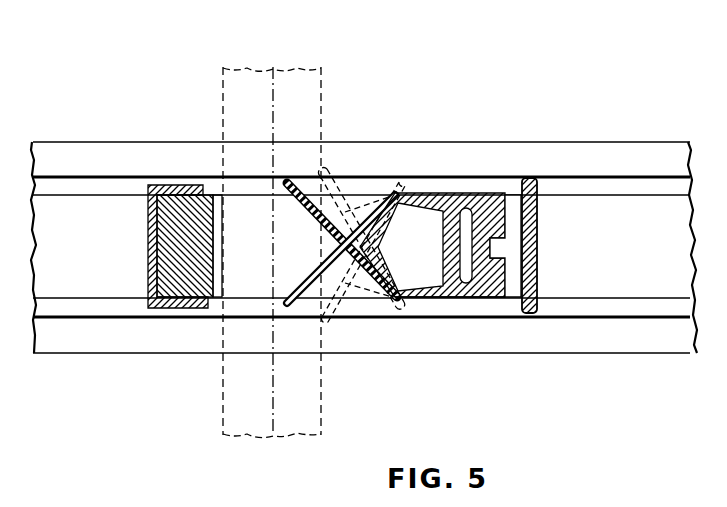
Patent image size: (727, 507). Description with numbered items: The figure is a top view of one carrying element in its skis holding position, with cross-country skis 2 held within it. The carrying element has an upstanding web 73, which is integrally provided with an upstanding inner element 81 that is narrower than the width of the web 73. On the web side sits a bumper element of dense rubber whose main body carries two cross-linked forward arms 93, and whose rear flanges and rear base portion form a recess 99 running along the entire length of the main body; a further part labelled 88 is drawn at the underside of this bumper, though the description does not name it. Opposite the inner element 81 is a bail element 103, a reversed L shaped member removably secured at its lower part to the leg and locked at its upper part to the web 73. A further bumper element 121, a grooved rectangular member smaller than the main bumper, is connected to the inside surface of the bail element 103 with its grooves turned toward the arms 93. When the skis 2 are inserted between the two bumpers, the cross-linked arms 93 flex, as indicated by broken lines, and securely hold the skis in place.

The cross-country skis 2 is at (252, 68).
The upstanding web 73 is at (533, 180).
The upstanding inner element 81 is at (505, 197).
The bottom wall 88 is at (467, 306).
The cross-linked forward arms 93 is at (320, 205).
The recess 99 is at (466, 210).
The bail element 103 is at (172, 187).
The further bumper element 121 is at (175, 308).